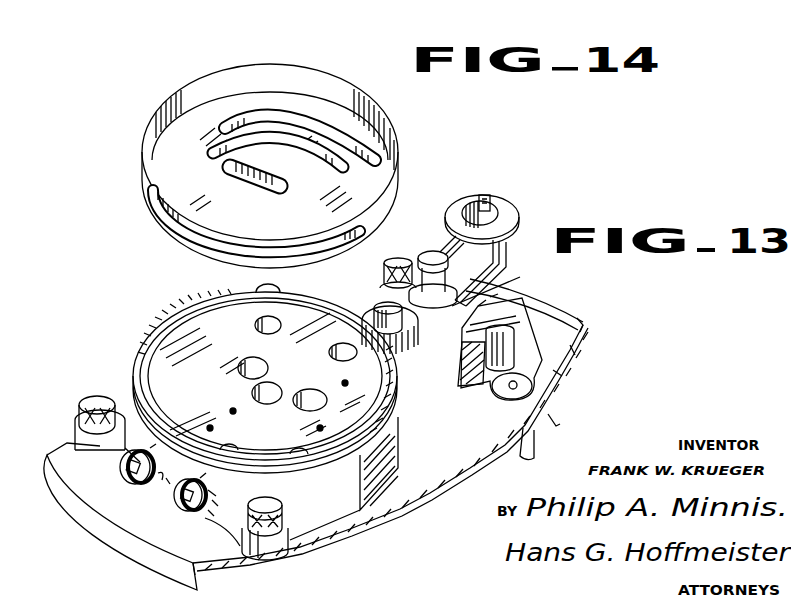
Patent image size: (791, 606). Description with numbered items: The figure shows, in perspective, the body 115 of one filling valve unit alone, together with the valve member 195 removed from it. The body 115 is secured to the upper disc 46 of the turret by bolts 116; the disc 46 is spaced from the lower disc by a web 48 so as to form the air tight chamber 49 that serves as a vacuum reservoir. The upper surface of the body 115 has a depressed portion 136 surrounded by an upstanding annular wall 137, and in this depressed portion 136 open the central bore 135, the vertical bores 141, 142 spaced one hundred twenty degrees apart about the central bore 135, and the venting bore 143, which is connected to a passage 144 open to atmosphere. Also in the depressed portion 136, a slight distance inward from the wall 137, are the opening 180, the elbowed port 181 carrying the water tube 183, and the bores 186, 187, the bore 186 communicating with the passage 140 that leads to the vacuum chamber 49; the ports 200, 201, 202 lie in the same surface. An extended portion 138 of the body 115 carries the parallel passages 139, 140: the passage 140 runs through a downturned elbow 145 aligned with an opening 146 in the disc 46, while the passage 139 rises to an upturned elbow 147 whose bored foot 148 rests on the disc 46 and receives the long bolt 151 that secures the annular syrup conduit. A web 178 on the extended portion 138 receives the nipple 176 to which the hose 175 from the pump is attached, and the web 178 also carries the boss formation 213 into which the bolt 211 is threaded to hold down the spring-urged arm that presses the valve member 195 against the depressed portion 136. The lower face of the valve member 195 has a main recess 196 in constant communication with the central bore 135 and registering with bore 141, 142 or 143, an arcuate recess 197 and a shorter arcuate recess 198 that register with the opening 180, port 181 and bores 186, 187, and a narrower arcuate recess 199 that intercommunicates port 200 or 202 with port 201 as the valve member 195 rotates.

In FIG. 14, the valve member 195 is at (233, 82).
In FIG. 14, the shorter arcuate recess 198 is at (400, 153).
In FIG. 14, the narrower arcuate recess 199 is at (303, 160).
In FIG. 14, the main recess 196 is at (247, 186).
In FIG. 14, the arcuate recess 197 is at (242, 243).
In FIG. 13, the upper disc 46 is at (325, 551).
In FIG. 13, the body 115 is at (368, 520).
In FIG. 13, the depressed portion 136 is at (212, 338).
In FIG. 13, the upstanding annular wall 137 is at (138, 347).
In FIG. 13, the tube 183 is at (255, 283).
In FIG. 13, the elbowed port 181 is at (254, 327).
In FIG. 13, the vertical bore 141 is at (238, 369).
In FIG. 13, the central bore 135 is at (270, 390).
In FIG. 13, the vertical bore 142 is at (328, 402).
In FIG. 13, the opening 180 is at (349, 359).
In FIG. 13, the venting bore 143 is at (229, 411).
In FIG. 13, the port 200 is at (214, 428).
In FIG. 13, the port 201 is at (316, 428).
In FIG. 13, the port 202 is at (346, 386).
In FIG. 13, the bore 186 is at (238, 449).
In FIG. 13, the bore 187 is at (308, 451).
In FIG. 13, the bolts 116 is at (97, 402).
In FIG. 13, the passage 144 is at (152, 487).
In FIG. 13, the bolt 211 is at (372, 305).
In FIG. 13, the passage 139 is at (497, 217).
In FIG. 13, the long bolt 151 is at (496, 199).
In FIG. 13, the upturned elbow 147 is at (505, 262).
In FIG. 13, the bored foot 148 is at (513, 288).
In FIG. 13, the hose 175 is at (498, 283).
In FIG. 13, the nipple 176 is at (513, 304).
In FIG. 13, the downturned elbow 145 is at (586, 331).
In FIG. 13, the passage 140 is at (575, 352).
In FIG. 13, the opening 146 is at (560, 371).
In FIG. 13, the extended portion 138 is at (420, 402).
In FIG. 13, the web 178 is at (452, 335).
In FIG. 13, the boss formation 213 is at (410, 363).
In FIG. 13, the web 48 is at (534, 452).
In FIG. 13, the air tight chamber 49 is at (556, 424).